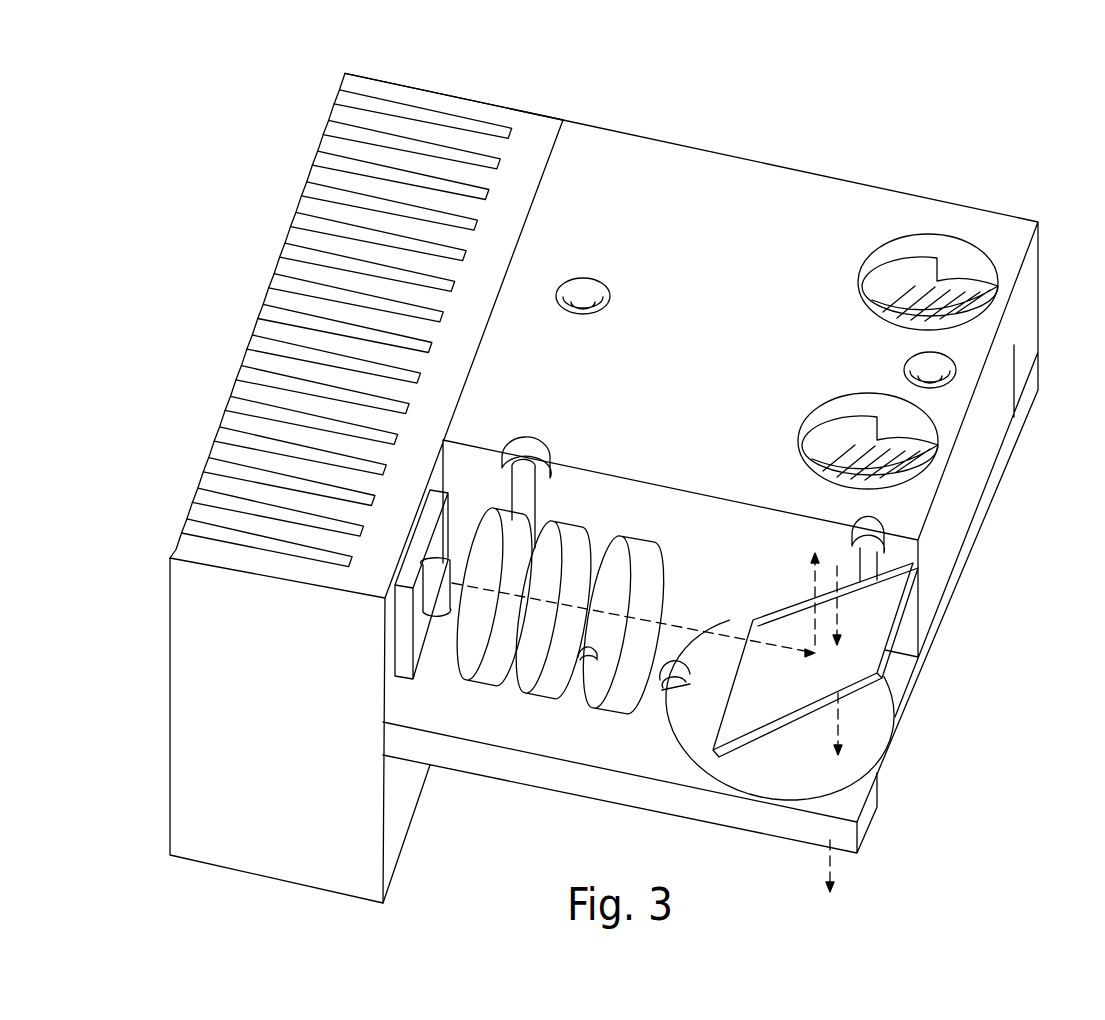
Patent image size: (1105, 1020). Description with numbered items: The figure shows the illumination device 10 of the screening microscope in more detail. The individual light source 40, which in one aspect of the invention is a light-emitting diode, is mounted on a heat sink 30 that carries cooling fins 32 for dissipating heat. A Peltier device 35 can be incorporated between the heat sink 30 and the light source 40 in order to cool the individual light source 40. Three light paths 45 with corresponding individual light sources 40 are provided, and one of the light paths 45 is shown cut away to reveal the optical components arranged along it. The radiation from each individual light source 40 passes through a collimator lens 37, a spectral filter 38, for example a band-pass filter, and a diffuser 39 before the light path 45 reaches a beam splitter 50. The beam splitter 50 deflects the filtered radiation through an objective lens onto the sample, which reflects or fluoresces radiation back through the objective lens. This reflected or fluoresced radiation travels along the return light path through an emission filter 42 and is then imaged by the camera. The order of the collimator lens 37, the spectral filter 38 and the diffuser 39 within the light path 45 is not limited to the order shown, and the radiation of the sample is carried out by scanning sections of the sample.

The illumination device 10 is at (822, 168).
The heat sink 30 is at (277, 730).
The cooling fins 32 is at (366, 319).
The Peltier device 35 is at (396, 680).
The collimator lens 37 is at (476, 670).
The spectral filter 38 is at (528, 680).
The diffuser 39 is at (603, 695).
The individual light source 40 is at (430, 622).
The emission filter 42 is at (780, 710).
The light path 45 is at (690, 625).
The beam splitter 50 is at (815, 660).